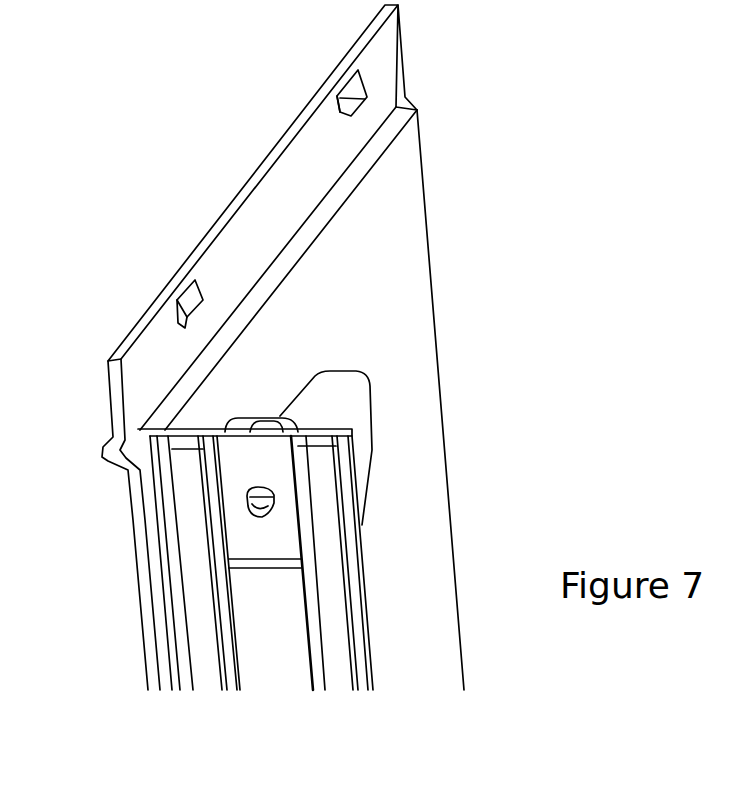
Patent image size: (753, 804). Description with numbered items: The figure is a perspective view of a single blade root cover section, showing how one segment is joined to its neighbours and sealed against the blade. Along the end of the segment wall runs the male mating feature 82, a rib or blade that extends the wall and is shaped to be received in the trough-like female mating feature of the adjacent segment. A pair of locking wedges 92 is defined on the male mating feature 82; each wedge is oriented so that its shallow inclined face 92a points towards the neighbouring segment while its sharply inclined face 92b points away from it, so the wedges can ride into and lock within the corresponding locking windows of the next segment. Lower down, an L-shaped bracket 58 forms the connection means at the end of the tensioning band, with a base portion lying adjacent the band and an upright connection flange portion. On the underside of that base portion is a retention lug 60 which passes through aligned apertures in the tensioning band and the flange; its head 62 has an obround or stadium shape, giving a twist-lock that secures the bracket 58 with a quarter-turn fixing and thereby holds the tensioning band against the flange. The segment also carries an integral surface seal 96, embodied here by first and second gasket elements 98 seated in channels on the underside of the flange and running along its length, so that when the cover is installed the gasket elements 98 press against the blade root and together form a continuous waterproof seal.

The male mating feature 82 is at (390, 55).
The locking wedge 92 is at (380, 103).
The shallow inclined face 92a is at (353, 88).
The sharply inclined face 92b is at (351, 117).
The bracket 58 is at (316, 373).
The gasket element 98 is at (180, 460).
The surface seal 96 is at (374, 454).
The retention lug 60 is at (286, 494).
The head 62 is at (258, 518).